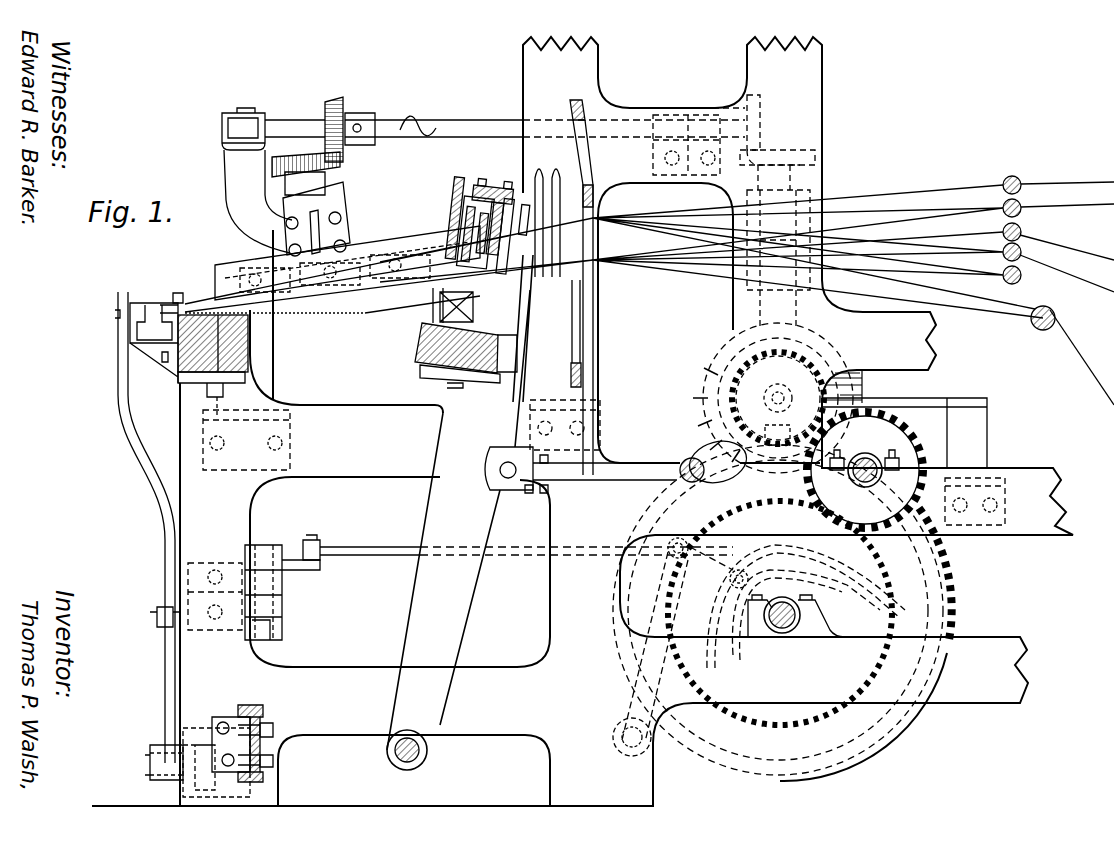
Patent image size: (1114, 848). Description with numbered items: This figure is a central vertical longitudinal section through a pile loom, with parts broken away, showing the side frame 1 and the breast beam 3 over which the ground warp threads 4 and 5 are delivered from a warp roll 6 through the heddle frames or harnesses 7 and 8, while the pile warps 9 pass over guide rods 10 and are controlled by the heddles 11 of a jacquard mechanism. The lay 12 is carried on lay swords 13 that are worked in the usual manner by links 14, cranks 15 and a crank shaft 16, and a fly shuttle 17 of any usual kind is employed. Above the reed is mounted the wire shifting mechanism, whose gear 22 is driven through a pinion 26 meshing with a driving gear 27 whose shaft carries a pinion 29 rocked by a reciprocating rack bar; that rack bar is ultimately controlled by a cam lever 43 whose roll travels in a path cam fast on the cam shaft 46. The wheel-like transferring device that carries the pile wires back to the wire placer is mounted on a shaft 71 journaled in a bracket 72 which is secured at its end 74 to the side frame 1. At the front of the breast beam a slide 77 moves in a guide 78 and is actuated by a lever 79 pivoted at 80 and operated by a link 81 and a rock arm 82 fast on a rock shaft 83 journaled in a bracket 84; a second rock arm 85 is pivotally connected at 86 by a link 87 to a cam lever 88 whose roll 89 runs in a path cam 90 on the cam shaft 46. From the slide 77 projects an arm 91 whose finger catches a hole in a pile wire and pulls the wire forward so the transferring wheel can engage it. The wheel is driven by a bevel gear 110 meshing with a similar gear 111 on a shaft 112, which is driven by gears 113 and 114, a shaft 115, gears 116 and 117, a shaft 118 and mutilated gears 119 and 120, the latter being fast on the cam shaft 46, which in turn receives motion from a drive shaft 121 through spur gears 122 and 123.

The side frame 1 is at (330, 478).
The breast beam 3 is at (252, 345).
The ground warp thread 4 is at (950, 310).
The ground warp thread 5 is at (975, 272).
The warp roll 6 is at (1043, 330).
The heddle frame or harness 7 is at (571, 375).
The heddle frame or harness 8 is at (594, 368).
The pile warps 9 is at (649, 237).
The guide rods 10 is at (345, 298).
The heddles 11 is at (548, 207).
The lay 12 is at (420, 352).
The lay swords 13 is at (460, 590).
The links 14 is at (572, 478).
The cranks 15 is at (735, 480).
The crank shaft 16 is at (688, 482).
The fly shuttle 17 is at (412, 315).
The gear 22 is at (520, 300).
The pinion 26 is at (462, 238).
The driving gear 27 is at (450, 183).
The pinion 29 is at (490, 183).
The cam lever 43 is at (575, 195).
The cam shaft 46 is at (790, 628).
The shaft 71 is at (322, 200).
The bracket 72 is at (290, 237).
The bracket end 74 is at (200, 428).
The slide 77 is at (150, 300).
The guide 78 is at (128, 345).
The lever 79 is at (150, 480).
The pivot 80 is at (150, 765).
The link 81 is at (155, 612).
The rock arm 82 is at (260, 625).
The rock shaft 83 is at (282, 607).
The bracket 84 is at (282, 580).
The rock arm 85 is at (290, 558).
The pivot connection 86 is at (318, 540).
The link 87 is at (396, 545).
The cam lever 88 is at (650, 655).
The roll 89 is at (752, 572).
The path cam 90 is at (835, 752).
The arm 91 is at (178, 293).
The bevel gear 110 is at (262, 160).
The bevel gear 111 is at (340, 97).
The shaft 112 is at (486, 130).
The gear 113 is at (755, 115).
The gear 114 is at (805, 150).
The shaft 115 is at (805, 190).
The gear 116 is at (828, 300).
The gear 117 is at (840, 345).
The shaft 118 is at (778, 398).
The mutilated gear 119 is at (700, 372).
The mutilated gear 120 is at (950, 568).
The drive shaft 121 is at (862, 488).
The spur gear 122 is at (885, 432).
The spur gear 123 is at (880, 568).